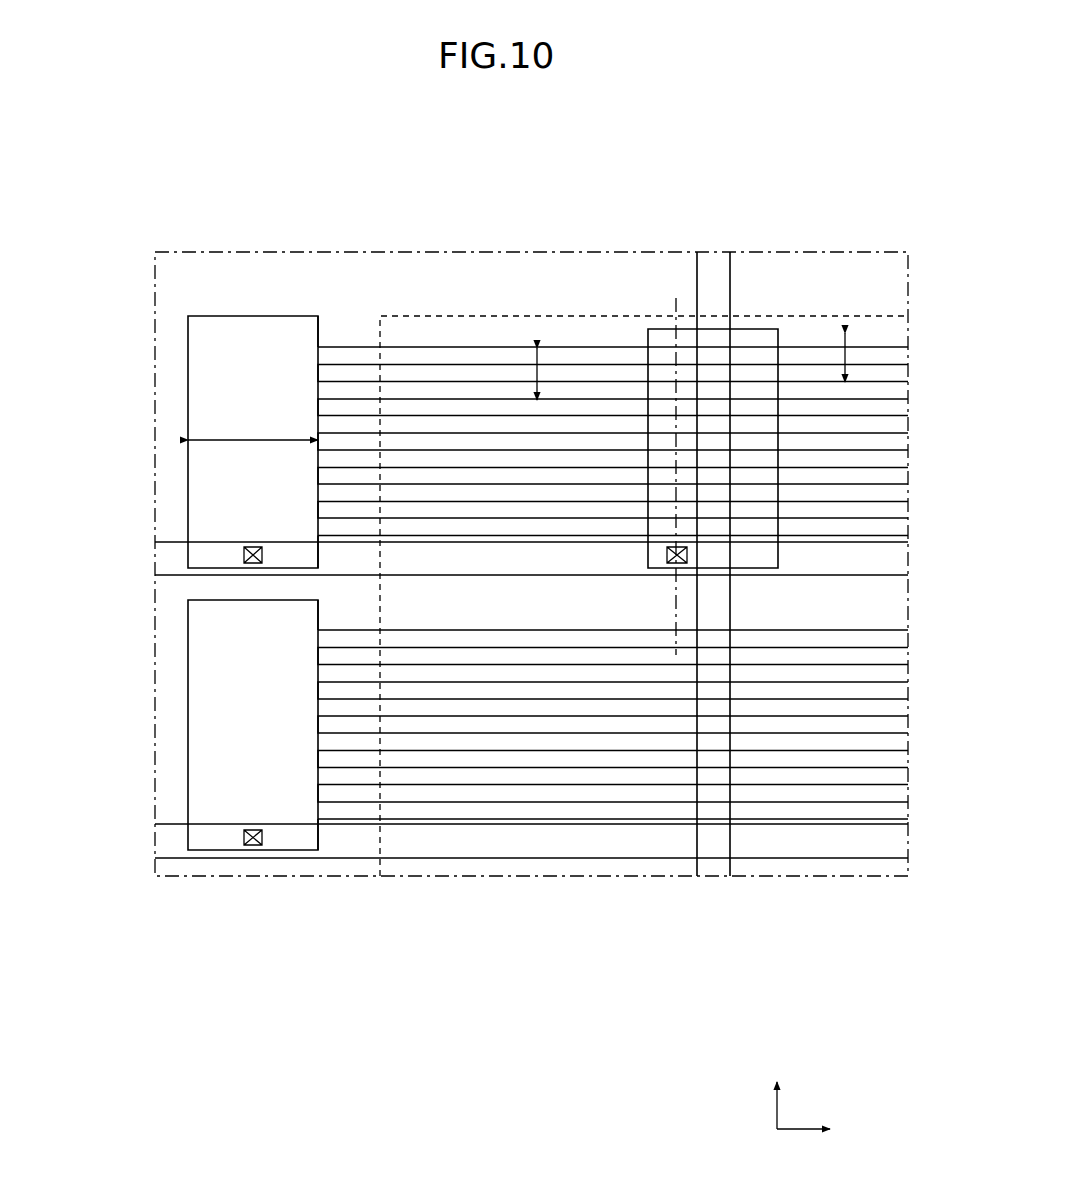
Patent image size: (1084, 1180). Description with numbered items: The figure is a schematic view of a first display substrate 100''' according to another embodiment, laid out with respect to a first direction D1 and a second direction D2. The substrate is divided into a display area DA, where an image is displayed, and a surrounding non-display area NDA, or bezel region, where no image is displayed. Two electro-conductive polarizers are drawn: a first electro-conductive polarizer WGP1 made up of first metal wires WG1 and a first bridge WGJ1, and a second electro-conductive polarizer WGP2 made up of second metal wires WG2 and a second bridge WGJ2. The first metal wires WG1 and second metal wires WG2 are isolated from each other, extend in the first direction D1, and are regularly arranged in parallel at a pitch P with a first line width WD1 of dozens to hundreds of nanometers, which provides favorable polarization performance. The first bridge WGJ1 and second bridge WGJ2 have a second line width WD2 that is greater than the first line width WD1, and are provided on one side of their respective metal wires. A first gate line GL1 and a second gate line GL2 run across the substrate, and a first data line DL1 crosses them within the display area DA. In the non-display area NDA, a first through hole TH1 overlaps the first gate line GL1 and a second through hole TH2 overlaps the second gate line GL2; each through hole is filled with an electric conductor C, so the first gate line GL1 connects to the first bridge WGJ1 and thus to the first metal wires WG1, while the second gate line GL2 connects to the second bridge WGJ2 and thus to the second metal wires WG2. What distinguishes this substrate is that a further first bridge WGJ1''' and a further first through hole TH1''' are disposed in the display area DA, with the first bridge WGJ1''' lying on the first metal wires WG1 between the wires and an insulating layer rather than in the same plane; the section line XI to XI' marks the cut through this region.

The first display substrate 100''' is at (531, 495).
The first electro-conductive polarizer WGP1 is at (548, 355).
The first bridge WGJ1 is at (253, 383).
The first metal wires WG1 is at (413, 355).
The second electro-conductive polarizer WGP2 is at (548, 793).
The second bridge WGJ2 is at (277, 808).
The second metal wires WG2 is at (412, 770).
The first bridge WGJ1''' is at (737, 385).
The pitch of wires P is at (538, 373).
The first line width WD1 is at (846, 357).
The second line width WD2 is at (253, 427).
The first data line DL1 is at (712, 258).
The first gate line GL1 is at (163, 558).
The second gate line GL2 is at (163, 841).
The first through hole TH1 is at (169, 574).
The second through hole TH2 is at (248, 845).
The first through hole TH1''' is at (757, 570).
The electric conductor C is at (244, 553).
The non-display area NDA is at (380, 887).
The display area DA is at (908, 887).
The section line XI is at (638, 469).
The section line XI' is at (633, 656).
The first direction D1 is at (822, 1129).
The second direction D2 is at (780, 1089).